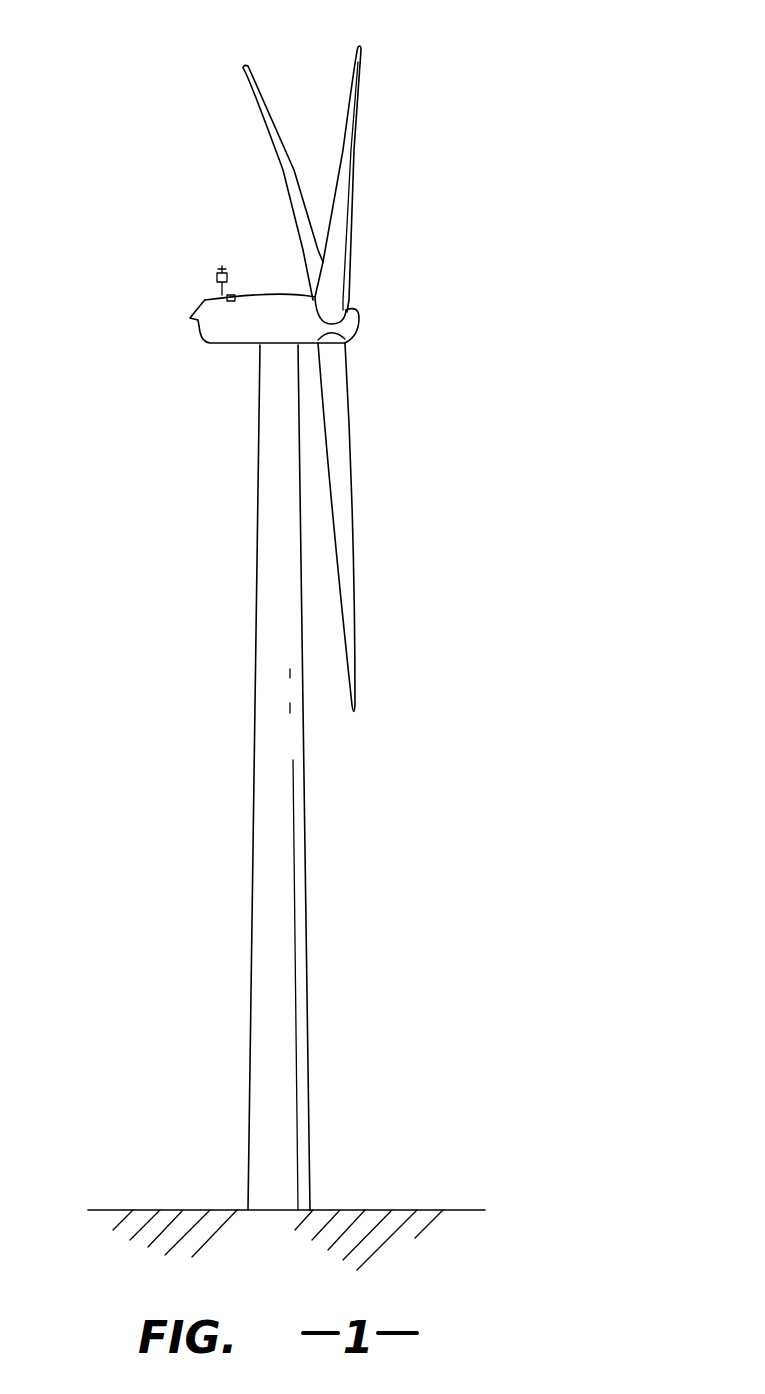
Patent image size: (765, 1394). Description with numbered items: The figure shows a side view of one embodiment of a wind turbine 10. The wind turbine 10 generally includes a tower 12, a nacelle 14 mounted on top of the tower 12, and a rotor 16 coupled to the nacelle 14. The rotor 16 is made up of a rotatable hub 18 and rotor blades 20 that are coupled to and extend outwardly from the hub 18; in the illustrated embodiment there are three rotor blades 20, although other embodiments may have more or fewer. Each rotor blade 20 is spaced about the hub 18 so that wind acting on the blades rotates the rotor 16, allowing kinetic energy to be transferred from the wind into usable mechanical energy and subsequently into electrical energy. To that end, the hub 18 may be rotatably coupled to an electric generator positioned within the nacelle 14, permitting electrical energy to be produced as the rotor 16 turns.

The wind turbine 10 is at (462, 128).
The tower 12 is at (265, 895).
The nacelle 14 is at (233, 345).
The rotor 16 is at (362, 297).
The rotatable hub 18 is at (357, 327).
The rotor blade 20 is at (351, 90).